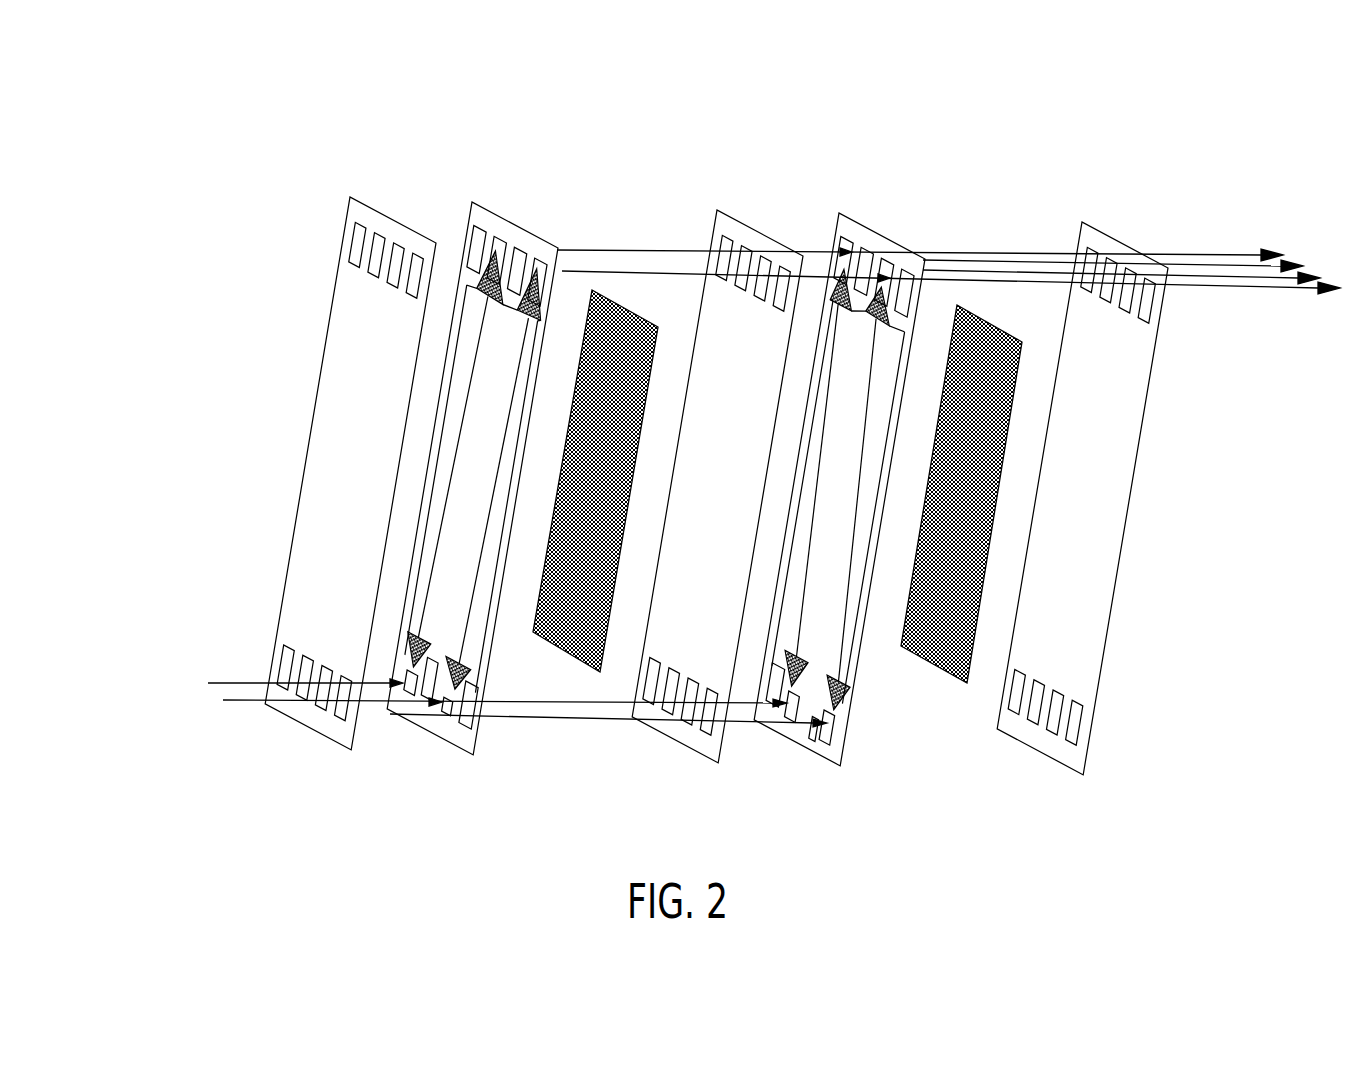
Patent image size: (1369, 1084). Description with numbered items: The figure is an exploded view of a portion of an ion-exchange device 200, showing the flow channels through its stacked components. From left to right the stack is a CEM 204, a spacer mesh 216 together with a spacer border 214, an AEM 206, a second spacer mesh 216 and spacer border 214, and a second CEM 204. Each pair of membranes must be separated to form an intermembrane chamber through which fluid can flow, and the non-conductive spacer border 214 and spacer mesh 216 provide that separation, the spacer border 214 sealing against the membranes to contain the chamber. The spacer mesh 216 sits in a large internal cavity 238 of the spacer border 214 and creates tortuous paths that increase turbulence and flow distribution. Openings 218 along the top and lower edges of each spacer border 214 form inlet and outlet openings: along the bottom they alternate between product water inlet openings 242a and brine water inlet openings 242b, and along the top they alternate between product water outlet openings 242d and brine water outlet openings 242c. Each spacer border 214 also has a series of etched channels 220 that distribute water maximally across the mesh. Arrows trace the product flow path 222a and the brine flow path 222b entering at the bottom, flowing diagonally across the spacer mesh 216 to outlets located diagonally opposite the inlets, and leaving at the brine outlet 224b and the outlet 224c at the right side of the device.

The ion-exchange device 200 is at (122, 156).
The cation-exchange membrane 204 is at (708, 453).
The anion-exchange membrane 206 is at (717, 446).
The spacer border 214 is at (648, 435).
The spacer mesh 216 is at (777, 422).
The openings 218 is at (439, 727).
The channels 220 is at (620, 733).
The product flow path 222a is at (500, 748).
The brine flow path 222b is at (282, 723).
The brine outlet 224b is at (1121, 319).
The output beam 224c is at (948, 233).
The internal cavity 238 is at (480, 546).
The product water inlet openings 242a is at (256, 661).
The brine water inlet openings 242b is at (285, 611).
The brine water outlet openings 242c is at (322, 308).
The product water outlet openings 242d is at (298, 248).